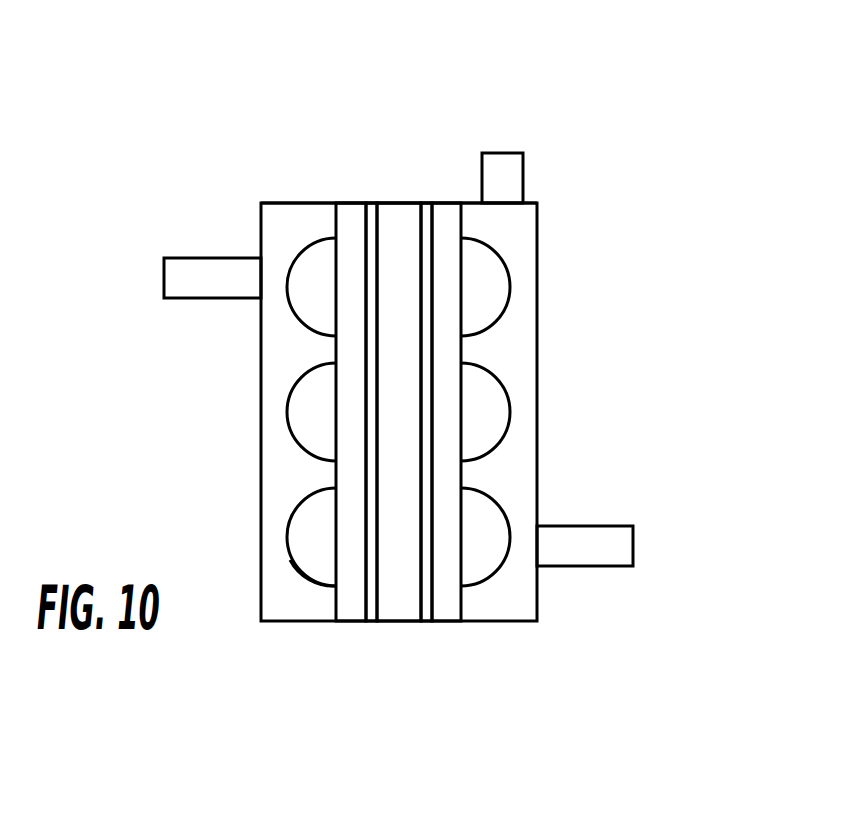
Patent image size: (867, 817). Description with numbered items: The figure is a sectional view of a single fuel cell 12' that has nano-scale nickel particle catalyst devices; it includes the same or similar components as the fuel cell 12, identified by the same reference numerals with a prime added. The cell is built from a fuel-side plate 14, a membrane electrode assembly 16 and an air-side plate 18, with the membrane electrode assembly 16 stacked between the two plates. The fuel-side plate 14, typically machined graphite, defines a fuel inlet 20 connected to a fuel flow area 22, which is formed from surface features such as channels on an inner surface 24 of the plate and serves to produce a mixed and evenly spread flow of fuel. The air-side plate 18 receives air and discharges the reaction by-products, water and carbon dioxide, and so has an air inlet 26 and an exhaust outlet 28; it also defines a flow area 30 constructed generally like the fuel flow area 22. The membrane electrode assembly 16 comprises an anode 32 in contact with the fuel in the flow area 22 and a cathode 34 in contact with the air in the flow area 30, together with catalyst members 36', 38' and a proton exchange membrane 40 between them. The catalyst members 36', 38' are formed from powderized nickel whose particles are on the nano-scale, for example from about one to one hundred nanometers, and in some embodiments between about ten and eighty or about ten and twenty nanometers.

The fuel cell 12' is at (397, 401).
The cell 12 is at (397, 422).
The fuel-side plate 14 is at (313, 203).
The membrane electrode assembly 16 is at (462, 174).
The air-side plate 18 is at (560, 218).
The fuel inlet 20 is at (163, 277).
The fuel flow area 22 is at (302, 299).
The inner surface 24 is at (312, 573).
The air inlet 26 is at (637, 543).
The exhaust outlet 28 is at (502, 152).
The flow area 30 is at (467, 299).
The anode 32 is at (348, 622).
The cathode 34 is at (457, 622).
The catalyst member 36' is at (371, 490).
The catalyst member 38' is at (477, 465).
The proton exchange membrane 40 is at (400, 622).